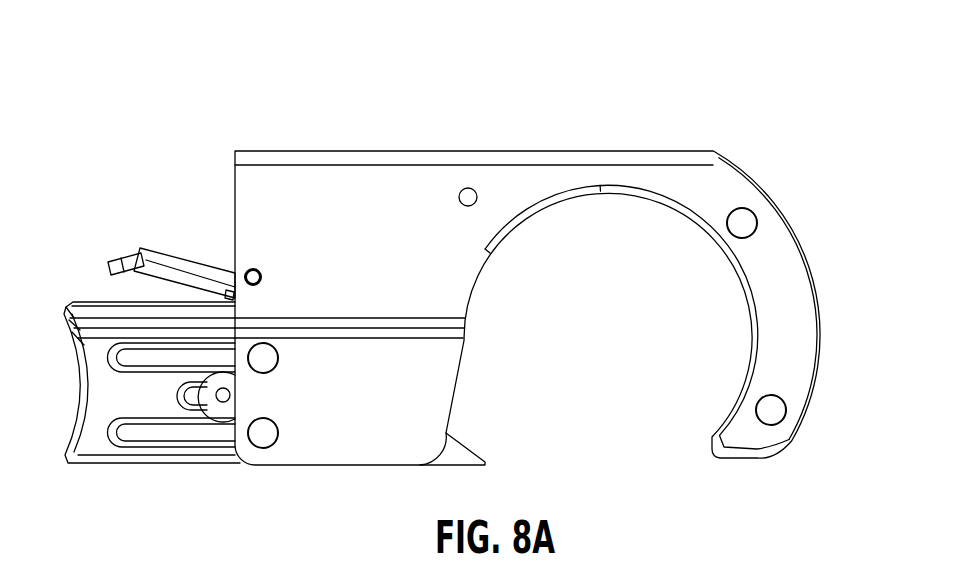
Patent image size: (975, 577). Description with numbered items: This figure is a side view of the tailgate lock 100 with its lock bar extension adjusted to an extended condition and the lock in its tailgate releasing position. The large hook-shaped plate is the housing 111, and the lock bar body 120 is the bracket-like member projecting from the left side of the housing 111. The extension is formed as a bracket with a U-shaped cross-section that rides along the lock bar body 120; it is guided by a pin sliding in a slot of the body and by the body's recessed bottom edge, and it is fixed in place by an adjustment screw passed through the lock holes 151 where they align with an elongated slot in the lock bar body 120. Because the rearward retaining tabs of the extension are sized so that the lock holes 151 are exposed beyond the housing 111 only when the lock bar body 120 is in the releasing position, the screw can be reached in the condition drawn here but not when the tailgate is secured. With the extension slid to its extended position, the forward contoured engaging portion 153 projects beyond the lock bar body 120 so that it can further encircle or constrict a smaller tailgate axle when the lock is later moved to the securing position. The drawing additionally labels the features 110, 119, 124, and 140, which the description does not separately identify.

The tailgate lock 100 is at (661, 80).
The main plate body 110 is at (546, 106).
The housing 111 is at (349, 207).
The hook portion 119 is at (793, 302).
The lock bar body 120 is at (134, 502).
The slots 124 is at (163, 444).
The lever 140 is at (173, 254).
The lock holes 151 is at (227, 393).
The contoured engaging portion 153 is at (465, 464).